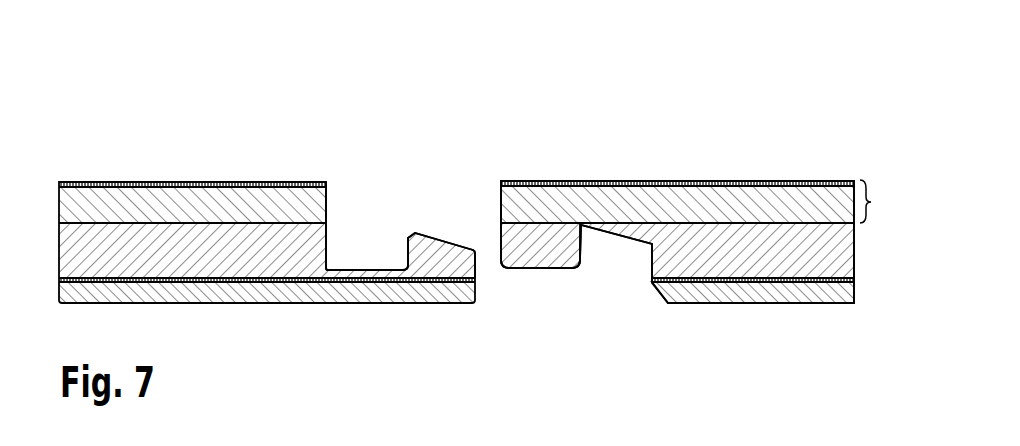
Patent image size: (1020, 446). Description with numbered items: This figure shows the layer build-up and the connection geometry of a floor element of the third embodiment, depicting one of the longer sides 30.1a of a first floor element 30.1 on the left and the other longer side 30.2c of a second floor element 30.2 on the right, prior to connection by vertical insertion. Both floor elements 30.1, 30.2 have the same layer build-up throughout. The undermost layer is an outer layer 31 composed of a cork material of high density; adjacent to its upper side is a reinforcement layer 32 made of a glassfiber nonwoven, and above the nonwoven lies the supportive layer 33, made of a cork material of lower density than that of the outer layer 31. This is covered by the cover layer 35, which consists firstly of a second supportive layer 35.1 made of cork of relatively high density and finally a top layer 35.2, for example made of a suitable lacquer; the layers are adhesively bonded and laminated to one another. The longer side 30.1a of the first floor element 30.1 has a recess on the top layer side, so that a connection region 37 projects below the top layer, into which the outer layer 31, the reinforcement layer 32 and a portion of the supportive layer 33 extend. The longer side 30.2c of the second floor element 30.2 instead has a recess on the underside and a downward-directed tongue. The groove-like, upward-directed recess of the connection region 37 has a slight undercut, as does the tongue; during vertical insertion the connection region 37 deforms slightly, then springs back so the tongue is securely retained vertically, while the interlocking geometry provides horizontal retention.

The first floor element 30.1 is at (309, 323).
The longer side of the first floor element 30.1a is at (379, 147).
The connection region 37 is at (424, 327).
The second floor element 30.2 is at (770, 320).
The longer side of the second floor element 30.2c is at (550, 127).
The cover layer 35 is at (862, 180).
The second supportive layer 35.1 is at (656, 202).
The top layer 35.2 is at (611, 182).
The supportive layer 33 is at (689, 258).
The reinforcement layer 32 is at (733, 279).
The outer layer 31 is at (814, 287).